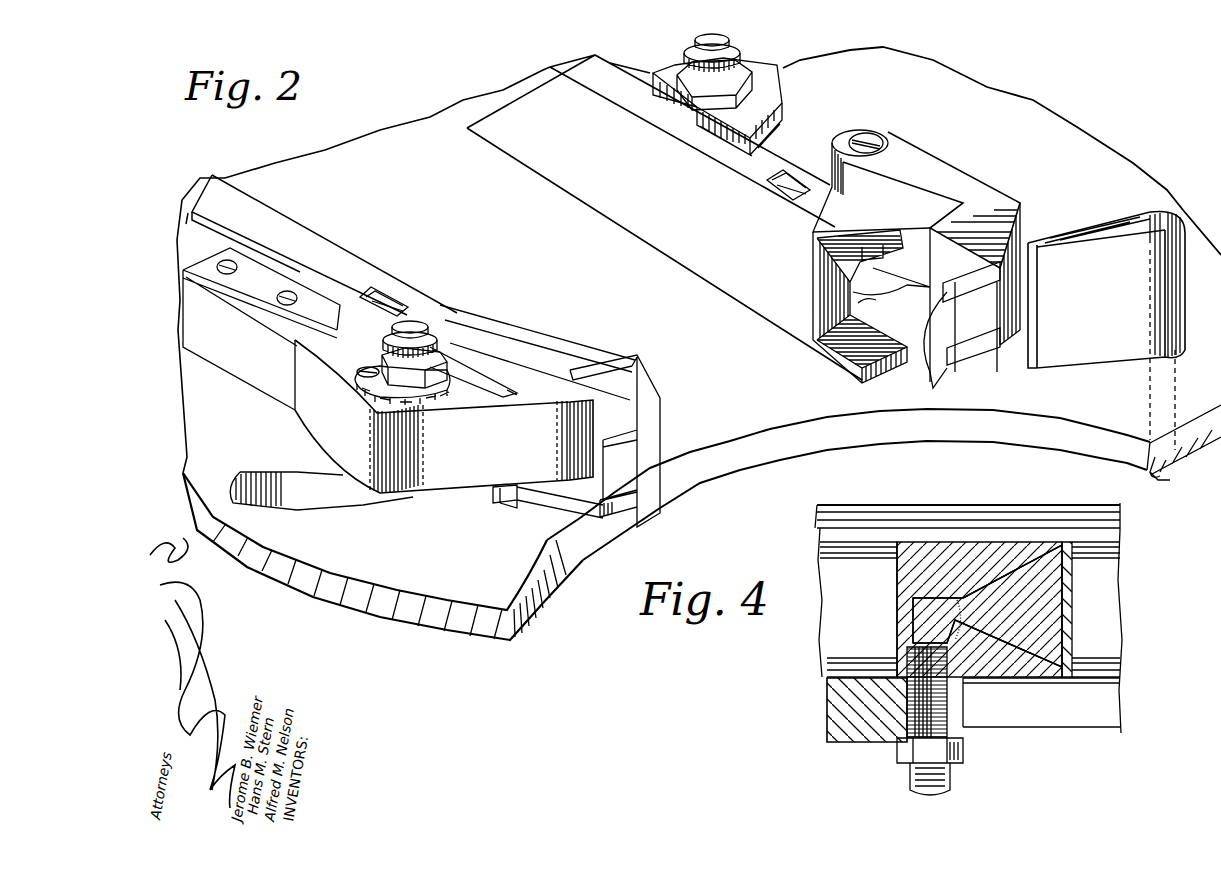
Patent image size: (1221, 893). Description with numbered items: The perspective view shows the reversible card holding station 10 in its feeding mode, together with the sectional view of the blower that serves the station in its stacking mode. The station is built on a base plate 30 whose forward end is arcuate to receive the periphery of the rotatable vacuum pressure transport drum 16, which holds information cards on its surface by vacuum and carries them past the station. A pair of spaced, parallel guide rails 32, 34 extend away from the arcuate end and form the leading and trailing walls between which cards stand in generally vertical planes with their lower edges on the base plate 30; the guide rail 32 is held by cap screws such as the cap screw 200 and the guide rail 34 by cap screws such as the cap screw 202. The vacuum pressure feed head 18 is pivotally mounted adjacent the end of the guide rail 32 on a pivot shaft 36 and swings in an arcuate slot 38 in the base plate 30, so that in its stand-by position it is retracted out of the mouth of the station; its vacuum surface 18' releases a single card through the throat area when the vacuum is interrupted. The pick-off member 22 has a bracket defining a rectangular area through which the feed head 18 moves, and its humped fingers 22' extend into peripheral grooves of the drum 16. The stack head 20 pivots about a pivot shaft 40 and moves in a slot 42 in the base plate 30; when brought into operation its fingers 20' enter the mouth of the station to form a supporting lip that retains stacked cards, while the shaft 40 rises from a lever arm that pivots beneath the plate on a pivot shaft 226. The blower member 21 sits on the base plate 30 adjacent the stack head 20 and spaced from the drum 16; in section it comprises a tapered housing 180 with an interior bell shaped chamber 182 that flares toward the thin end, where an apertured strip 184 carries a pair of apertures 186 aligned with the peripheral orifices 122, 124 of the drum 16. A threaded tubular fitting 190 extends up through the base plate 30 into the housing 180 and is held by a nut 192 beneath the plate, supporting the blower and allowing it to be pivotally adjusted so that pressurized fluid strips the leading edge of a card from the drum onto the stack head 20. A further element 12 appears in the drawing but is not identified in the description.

In FIG. 2, the reversible card holding station 10 is at (439, 207).
In FIG. 2, the plate section 12 is at (1175, 462).
In FIG. 4, the rotatable vacuum pressure transport drum 16 is at (980, 506).
In FIG. 2, the vacuum pressure feed head 18 is at (425, 416).
In FIG. 2, the surface of the feed head 18' is at (616, 430).
In FIG. 2, the stack head 20 is at (916, 256).
In FIG. 2, the fingers of the stack head 20' is at (962, 333).
In FIG. 2, the blower member 21 is at (1147, 210).
In FIG. 4, the blower member 21 is at (951, 540).
In FIG. 2, the pick-off member 22 is at (409, 329).
In FIG. 2, the humped fingers 22' is at (548, 504).
In FIG. 2, the base plate 30 is at (732, 452).
In FIG. 4, the base plate 30 is at (857, 700).
In FIG. 2, the guide rail 32 is at (263, 227).
In FIG. 2, the guide rail 34 is at (530, 100).
In FIG. 2, the pivot shaft 36 is at (423, 317).
In FIG. 2, the arcuate slot 38 is at (317, 503).
In FIG. 2, the pivot shaft 40 is at (883, 128).
In FIG. 2, the slot 42 is at (867, 300).
In FIG. 4, the peripheral orifice 122 is at (833, 550).
In FIG. 4, the peripheral orifice 124 is at (840, 663).
In FIG. 4, the housing 180 is at (884, 577).
In FIG. 4, the interior bell shaped chamber 182 is at (1031, 616).
In FIG. 4, the apertured strip 184 is at (1073, 598).
In FIG. 4, the apertures 186 is at (1060, 548).
In FIG. 4, the threaded tubular fitting 190 is at (923, 697).
In FIG. 4, the nut 192 is at (940, 752).
In FIG. 2, the cap screw 200 is at (383, 300).
In FIG. 2, the cap screw 202 is at (767, 188).
In FIG. 2, the pivot shaft 226 is at (730, 38).